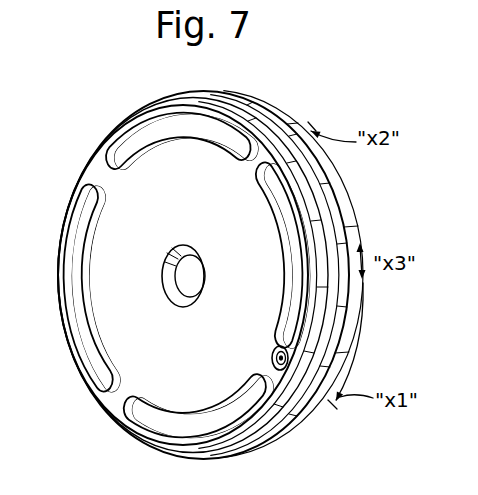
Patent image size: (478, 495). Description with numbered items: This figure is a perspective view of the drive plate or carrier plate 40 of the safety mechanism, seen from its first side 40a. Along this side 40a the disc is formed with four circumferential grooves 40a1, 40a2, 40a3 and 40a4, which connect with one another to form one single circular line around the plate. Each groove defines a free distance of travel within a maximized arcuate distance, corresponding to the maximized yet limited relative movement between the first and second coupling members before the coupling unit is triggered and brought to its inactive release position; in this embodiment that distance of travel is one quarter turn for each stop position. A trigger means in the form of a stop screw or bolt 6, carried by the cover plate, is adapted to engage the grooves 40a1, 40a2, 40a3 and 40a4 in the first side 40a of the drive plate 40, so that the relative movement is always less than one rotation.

The drive plate or carrier plate 40 is at (322, 127).
The first side of the drive plate 40a is at (255, 212).
The circumferential groove 40a1 is at (203, 124).
The circumferential groove 40a2 is at (68, 252).
The circumferential groove 40a3 is at (172, 436).
The circumferential groove 40a4 is at (288, 303).
The stop screw or bolt 6 is at (277, 370).